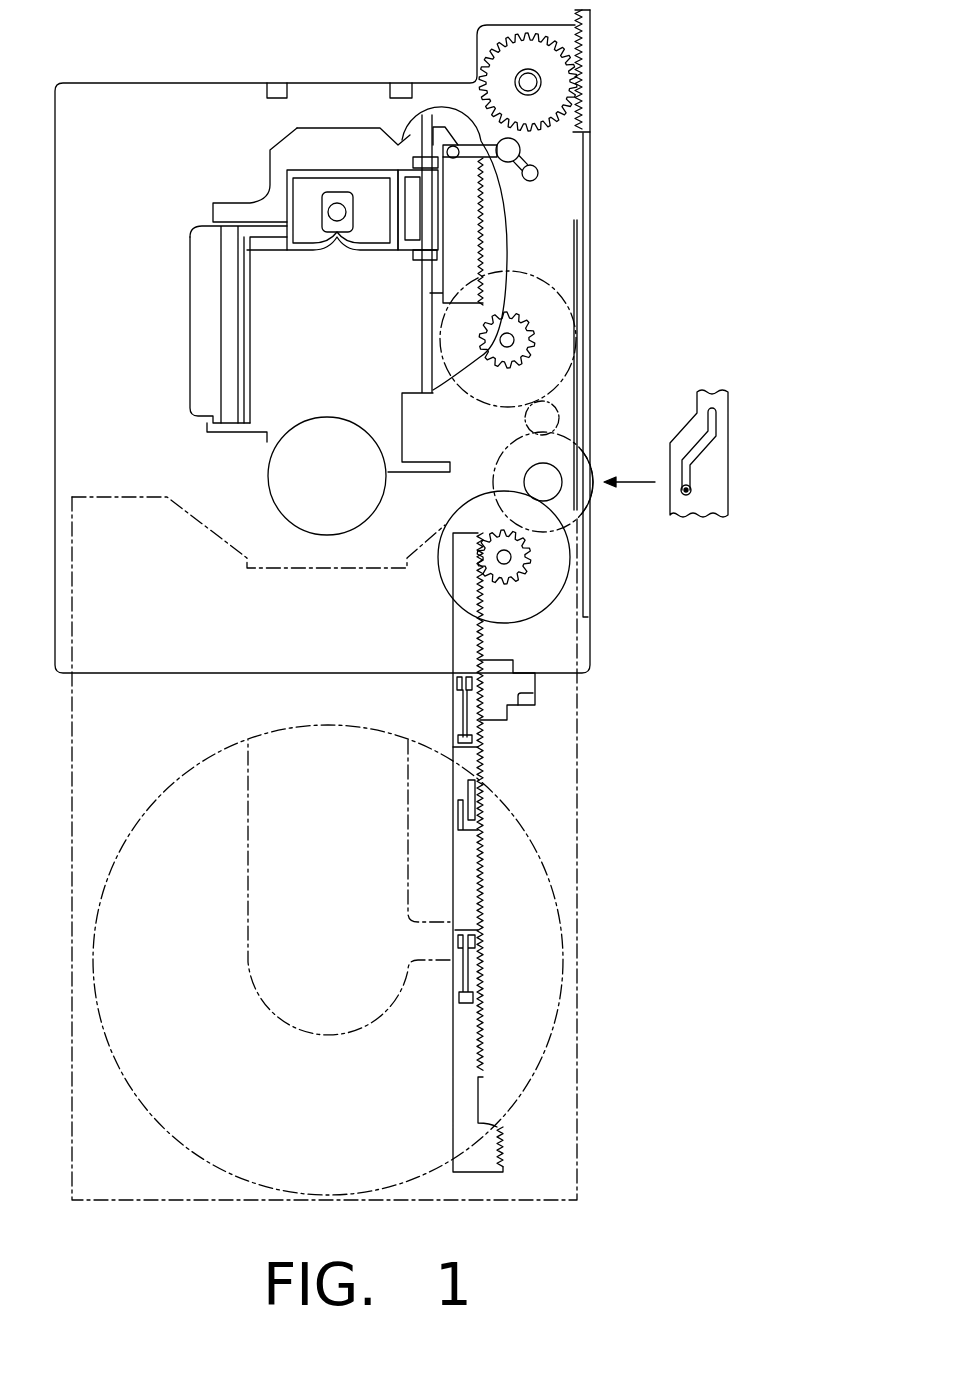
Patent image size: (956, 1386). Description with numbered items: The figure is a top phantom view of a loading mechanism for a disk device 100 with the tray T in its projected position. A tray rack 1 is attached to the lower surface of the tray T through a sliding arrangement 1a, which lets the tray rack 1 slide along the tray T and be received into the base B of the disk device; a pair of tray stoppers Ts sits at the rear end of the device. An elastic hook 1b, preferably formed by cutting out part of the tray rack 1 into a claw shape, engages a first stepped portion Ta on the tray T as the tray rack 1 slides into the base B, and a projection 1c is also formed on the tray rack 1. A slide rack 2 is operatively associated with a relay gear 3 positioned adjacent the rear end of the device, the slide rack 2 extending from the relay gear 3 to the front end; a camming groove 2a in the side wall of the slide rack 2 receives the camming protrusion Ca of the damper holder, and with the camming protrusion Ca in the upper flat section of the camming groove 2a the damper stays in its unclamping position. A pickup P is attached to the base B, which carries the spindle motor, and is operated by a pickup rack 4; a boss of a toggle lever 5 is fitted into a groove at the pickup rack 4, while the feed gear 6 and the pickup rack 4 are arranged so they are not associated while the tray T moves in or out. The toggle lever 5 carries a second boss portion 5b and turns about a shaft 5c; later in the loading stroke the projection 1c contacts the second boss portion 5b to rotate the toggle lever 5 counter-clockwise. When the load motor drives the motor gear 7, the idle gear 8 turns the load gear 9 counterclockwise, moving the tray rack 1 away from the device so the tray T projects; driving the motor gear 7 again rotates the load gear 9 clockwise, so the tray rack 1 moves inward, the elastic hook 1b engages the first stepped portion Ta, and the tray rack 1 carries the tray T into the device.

The loading mechanism for a disk device 100 is at (676, 231).
The base B is at (153, 97).
The tray stoppers Ts is at (275, 90).
The pickup P is at (367, 187).
The slide rack 2 is at (593, 33).
The relay gear 3 is at (597, 58).
The pickup rack 4 is at (472, 223).
The toggle lever 5 is at (547, 157).
The second boss portion 5b is at (540, 173).
The shaft 5c is at (520, 146).
The feed gear 6 is at (528, 318).
The motor gear 7 is at (560, 412).
The idle gear 8 is at (582, 482).
The load gear 9 is at (518, 567).
The camming groove 2a is at (705, 453).
The camming protrusion Ca is at (690, 478).
The tray rack 1 is at (470, 1100).
The sliding arrangement 1a is at (453, 712).
The elastic hook 1b is at (482, 840).
The projection 1c is at (527, 702).
The first stepped portion Ta is at (482, 818).
The tray T is at (582, 1062).